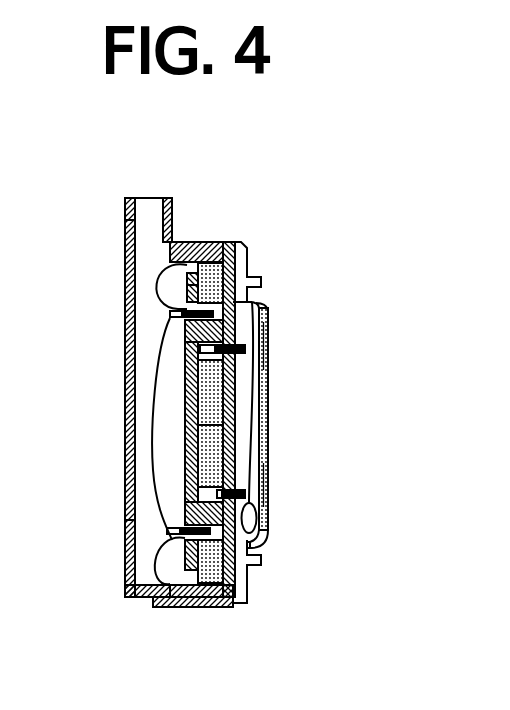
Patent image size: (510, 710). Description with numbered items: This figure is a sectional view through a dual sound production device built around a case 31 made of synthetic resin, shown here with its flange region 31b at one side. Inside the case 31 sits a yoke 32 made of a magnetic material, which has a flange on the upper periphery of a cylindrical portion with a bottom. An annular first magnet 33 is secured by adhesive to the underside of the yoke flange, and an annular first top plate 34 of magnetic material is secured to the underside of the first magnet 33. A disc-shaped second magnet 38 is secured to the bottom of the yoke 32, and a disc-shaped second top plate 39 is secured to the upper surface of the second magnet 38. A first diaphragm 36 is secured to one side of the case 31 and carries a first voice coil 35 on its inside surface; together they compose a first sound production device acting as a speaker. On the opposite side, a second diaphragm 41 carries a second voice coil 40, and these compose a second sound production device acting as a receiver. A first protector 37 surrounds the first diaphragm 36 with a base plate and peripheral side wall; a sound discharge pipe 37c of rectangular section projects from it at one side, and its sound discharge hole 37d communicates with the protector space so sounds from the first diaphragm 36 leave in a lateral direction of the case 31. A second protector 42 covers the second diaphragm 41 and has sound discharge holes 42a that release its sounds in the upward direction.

The case 31 is at (177, 608).
The flange portion 31b is at (242, 240).
The yoke 32 is at (210, 242).
The first magnet 33 is at (195, 280).
The first top plate 34 is at (190, 288).
The first voice coil 35 is at (169, 314).
The first diaphragm 36 is at (155, 378).
The first protector 37 is at (128, 500).
The sound discharge pipe 37c is at (128, 220).
The sound discharge hole 37d is at (148, 222).
The second magnet 38 is at (205, 408).
The second top plate 39 is at (205, 445).
The second voice coil 40 is at (165, 543).
The second diaphragm 41 is at (225, 608).
The second protector 42 is at (265, 302).
The sound discharge holes 42a is at (262, 478).